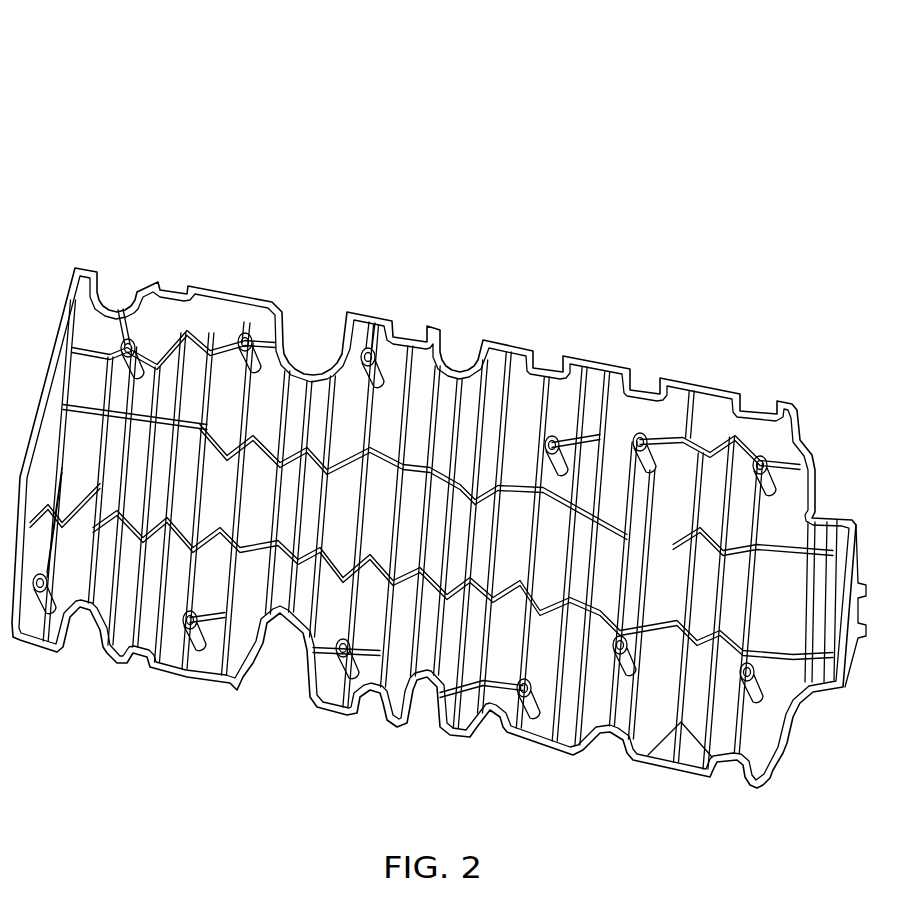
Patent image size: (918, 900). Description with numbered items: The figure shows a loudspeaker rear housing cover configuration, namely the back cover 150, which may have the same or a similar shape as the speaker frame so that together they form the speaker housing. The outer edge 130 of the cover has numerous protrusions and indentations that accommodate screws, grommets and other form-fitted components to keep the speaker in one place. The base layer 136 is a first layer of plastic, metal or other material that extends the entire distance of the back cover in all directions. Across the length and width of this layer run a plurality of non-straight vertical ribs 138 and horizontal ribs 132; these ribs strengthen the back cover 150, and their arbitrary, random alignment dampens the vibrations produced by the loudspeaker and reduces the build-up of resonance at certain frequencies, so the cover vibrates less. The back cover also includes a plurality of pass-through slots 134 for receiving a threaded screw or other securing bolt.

The back cover 150 is at (104, 104).
The outer edge 130 is at (200, 272).
The horizontal lines (ribs) 132 is at (82, 384).
The pass-through slots 134 is at (369, 347).
The base layer 136 is at (481, 427).
The non-straight vertical lines (ribs) 138 is at (512, 443).